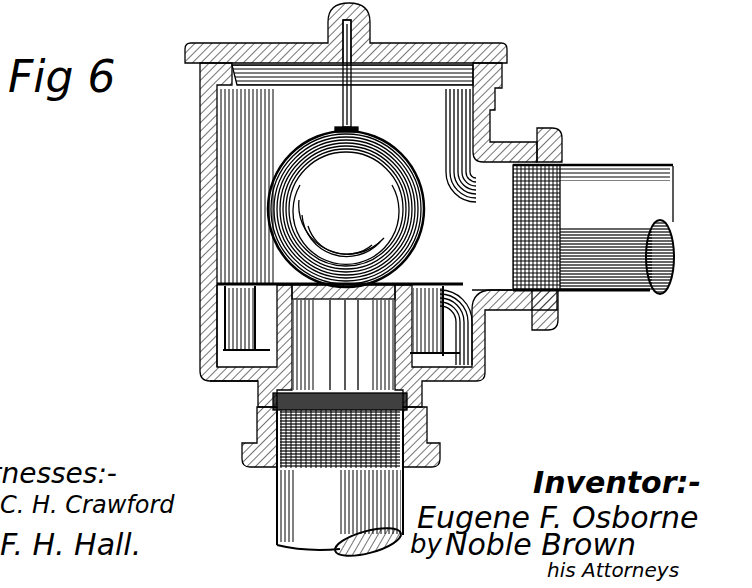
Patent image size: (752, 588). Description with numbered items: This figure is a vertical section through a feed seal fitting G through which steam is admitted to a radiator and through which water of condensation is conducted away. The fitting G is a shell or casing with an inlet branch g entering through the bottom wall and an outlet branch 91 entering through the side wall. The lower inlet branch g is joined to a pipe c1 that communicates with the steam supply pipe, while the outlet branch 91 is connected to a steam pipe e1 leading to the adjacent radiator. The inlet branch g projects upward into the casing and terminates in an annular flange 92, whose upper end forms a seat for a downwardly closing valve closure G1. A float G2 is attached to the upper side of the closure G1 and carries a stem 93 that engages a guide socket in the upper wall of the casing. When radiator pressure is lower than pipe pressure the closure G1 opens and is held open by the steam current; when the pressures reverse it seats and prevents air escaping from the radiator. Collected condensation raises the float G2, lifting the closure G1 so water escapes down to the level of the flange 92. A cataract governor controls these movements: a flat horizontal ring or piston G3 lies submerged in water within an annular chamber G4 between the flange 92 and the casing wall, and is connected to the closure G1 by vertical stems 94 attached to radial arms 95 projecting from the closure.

The fitting G is at (357, 205).
The valve closure G1 is at (410, 285).
The float G2 is at (346, 209).
The ring or piston G3 is at (238, 384).
The annular chamber G4 is at (220, 328).
The stem 93 is at (352, 110).
The annular flange 92 is at (340, 384).
The vertical stems 94 is at (248, 290).
The radial arms 95 is at (462, 290).
The outlet branch 91 is at (514, 143).
The inlet branch g is at (428, 434).
The steam pipe e1 is at (588, 166).
The pipe c1 is at (279, 500).